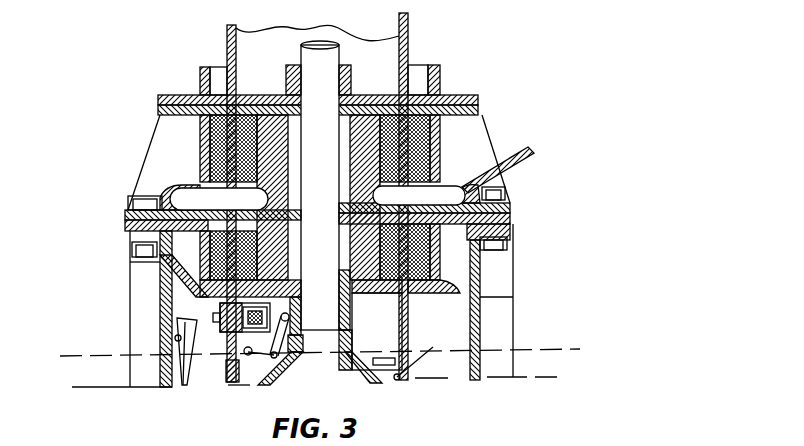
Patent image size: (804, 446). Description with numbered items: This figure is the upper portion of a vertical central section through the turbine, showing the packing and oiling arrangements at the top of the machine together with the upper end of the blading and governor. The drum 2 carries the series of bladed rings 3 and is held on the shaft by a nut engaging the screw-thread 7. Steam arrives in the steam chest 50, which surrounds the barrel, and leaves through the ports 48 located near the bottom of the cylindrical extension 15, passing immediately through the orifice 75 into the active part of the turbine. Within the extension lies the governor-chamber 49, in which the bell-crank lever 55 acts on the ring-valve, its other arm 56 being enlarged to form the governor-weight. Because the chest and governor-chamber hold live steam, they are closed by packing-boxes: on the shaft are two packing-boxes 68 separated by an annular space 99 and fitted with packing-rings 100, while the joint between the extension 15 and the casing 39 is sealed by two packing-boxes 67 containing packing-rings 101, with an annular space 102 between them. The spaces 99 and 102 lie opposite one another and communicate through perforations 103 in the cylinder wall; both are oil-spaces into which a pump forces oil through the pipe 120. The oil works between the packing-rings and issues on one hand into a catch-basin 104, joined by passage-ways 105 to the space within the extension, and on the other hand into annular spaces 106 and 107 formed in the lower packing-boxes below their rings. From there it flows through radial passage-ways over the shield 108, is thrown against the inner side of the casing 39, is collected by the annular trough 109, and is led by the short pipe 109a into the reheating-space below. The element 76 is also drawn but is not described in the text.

The cylindrical extension 15 is at (408, 41).
The packing-rings 101 is at (200, 88).
The passage-ways 105 is at (236, 87).
The catch-basin 104 is at (421, 63).
The annular space 99 is at (437, 153).
The packing-rings 100 is at (438, 143).
The packing-boxes 68 is at (173, 200).
The packing-boxes 67 is at (200, 145).
The pipe 120 is at (531, 153).
The annular space 102 is at (190, 183).
The perforations 103 is at (228, 200).
The steam chest 50 is at (190, 264).
The shield 108 is at (207, 291).
The casing 39 is at (478, 273).
The annular trough 109 is at (183, 320).
The ports 48 is at (223, 358).
The rings 3 is at (320, 343).
The short pipe 109a is at (162, 363).
The governor-chamber 49 is at (231, 381).
The bell-crank lever 55 is at (258, 333).
The screw-thread 7 is at (299, 336).
The arm of bell-crank lever 56 is at (320, 213).
The drum 2 is at (346, 385).
The annular space 106 is at (382, 287).
The annular space 107 is at (420, 287).
The lever arm 76 is at (410, 375).
The orifice 75 is at (388, 378).